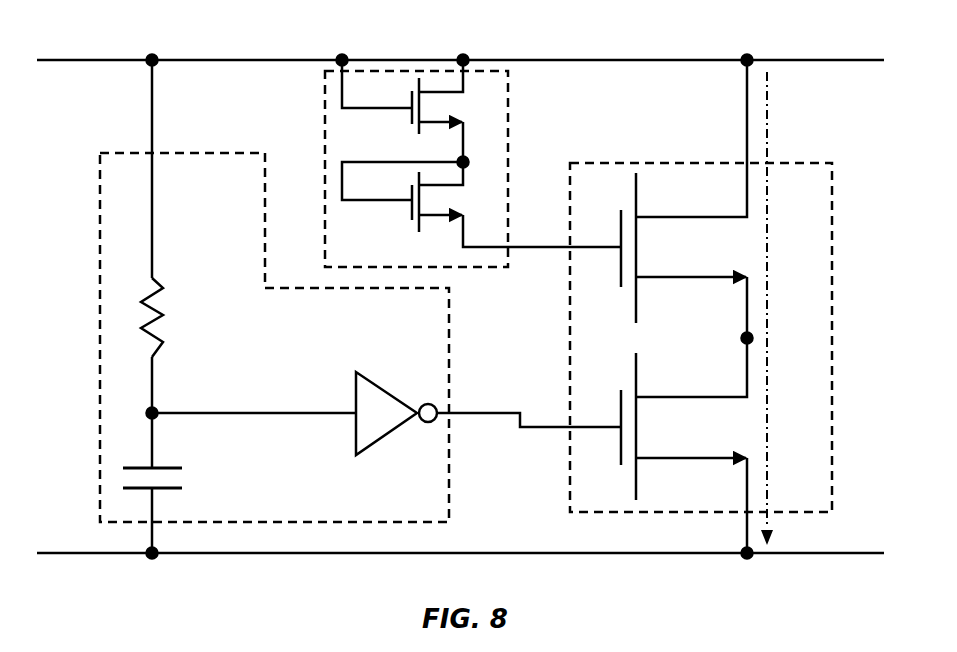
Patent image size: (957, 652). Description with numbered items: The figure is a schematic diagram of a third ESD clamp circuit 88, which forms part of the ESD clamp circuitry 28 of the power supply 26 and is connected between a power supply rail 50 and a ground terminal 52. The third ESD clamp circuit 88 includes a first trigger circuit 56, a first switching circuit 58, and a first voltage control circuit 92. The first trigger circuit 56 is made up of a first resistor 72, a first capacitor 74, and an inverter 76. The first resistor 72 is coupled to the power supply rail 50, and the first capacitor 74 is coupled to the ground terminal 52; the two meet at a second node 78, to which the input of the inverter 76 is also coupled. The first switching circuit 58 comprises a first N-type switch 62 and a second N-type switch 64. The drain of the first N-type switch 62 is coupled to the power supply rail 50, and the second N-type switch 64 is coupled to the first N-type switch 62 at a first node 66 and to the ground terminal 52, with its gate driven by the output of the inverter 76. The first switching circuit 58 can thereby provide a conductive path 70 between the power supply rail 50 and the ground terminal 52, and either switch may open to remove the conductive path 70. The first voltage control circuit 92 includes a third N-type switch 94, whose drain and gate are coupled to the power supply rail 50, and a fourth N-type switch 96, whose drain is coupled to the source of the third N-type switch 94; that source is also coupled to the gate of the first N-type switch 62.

The power supply 26 is at (106, 78).
The ESD clamp circuitry 28 is at (152, 104).
The third ESD clamp circuit 88 is at (128, 44).
The power supply rail 50 is at (558, 58).
The ground terminal 52 is at (502, 551).
The first trigger circuit 56 is at (338, 353).
The first switching circuit 58 is at (724, 306).
The first N-type switch 62 is at (633, 195).
The second N-type switch 64 is at (633, 375).
The first node 66 is at (744, 337).
The conductive path 70 is at (768, 305).
The first resistor 72 is at (165, 308).
The first capacitor 74 is at (138, 466).
The inverter 76 is at (390, 391).
The second node 78 is at (158, 408).
The first voltage control circuit 92 is at (473, 163).
The third N-type switch 94 is at (414, 131).
The fourth N-type switch 96 is at (414, 224).